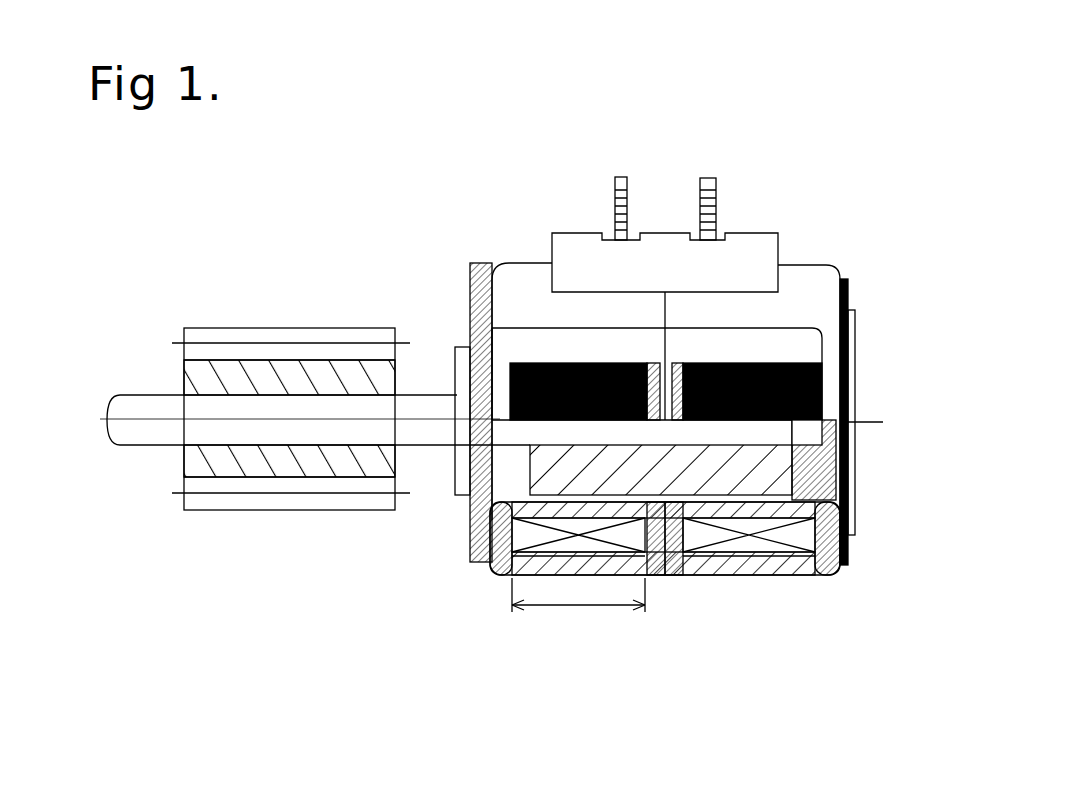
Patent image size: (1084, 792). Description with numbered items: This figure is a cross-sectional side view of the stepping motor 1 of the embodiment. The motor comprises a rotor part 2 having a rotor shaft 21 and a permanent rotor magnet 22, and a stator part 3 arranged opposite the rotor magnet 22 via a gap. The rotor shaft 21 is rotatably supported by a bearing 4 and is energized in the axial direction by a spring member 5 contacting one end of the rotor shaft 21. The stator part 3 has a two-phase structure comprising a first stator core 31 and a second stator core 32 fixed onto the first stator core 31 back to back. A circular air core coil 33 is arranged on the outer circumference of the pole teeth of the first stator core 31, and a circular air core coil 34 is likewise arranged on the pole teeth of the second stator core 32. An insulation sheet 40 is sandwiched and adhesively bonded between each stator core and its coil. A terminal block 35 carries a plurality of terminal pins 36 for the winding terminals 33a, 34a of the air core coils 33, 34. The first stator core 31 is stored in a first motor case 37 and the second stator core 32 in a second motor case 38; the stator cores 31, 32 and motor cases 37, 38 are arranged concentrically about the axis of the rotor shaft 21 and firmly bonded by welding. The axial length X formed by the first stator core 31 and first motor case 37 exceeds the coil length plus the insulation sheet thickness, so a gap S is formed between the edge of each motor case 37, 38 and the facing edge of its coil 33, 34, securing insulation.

The stepping motor 1 is at (452, 214).
The rotor part 2 is at (407, 258).
The rotor shaft 21 is at (310, 405).
The rotor magnet 22 is at (542, 474).
The stator part 3 is at (748, 588).
The first stator core 31 is at (655, 577).
The second stator core 32 is at (668, 577).
The air core coil 33 is at (555, 548).
The air core coil 34 is at (784, 560).
The winding terminal 33a is at (615, 222).
The winding terminal 34a is at (716, 222).
The terminal block 35 is at (770, 258).
The terminal pins 36 is at (700, 182).
The first motor case 37 is at (517, 278).
The second motor case 38 is at (827, 266).
The bearing 4 is at (853, 497).
The spring member 5 is at (853, 447).
The insulation sheet 40 is at (622, 560).
The gap S is at (492, 530).
The length X is at (578, 594).